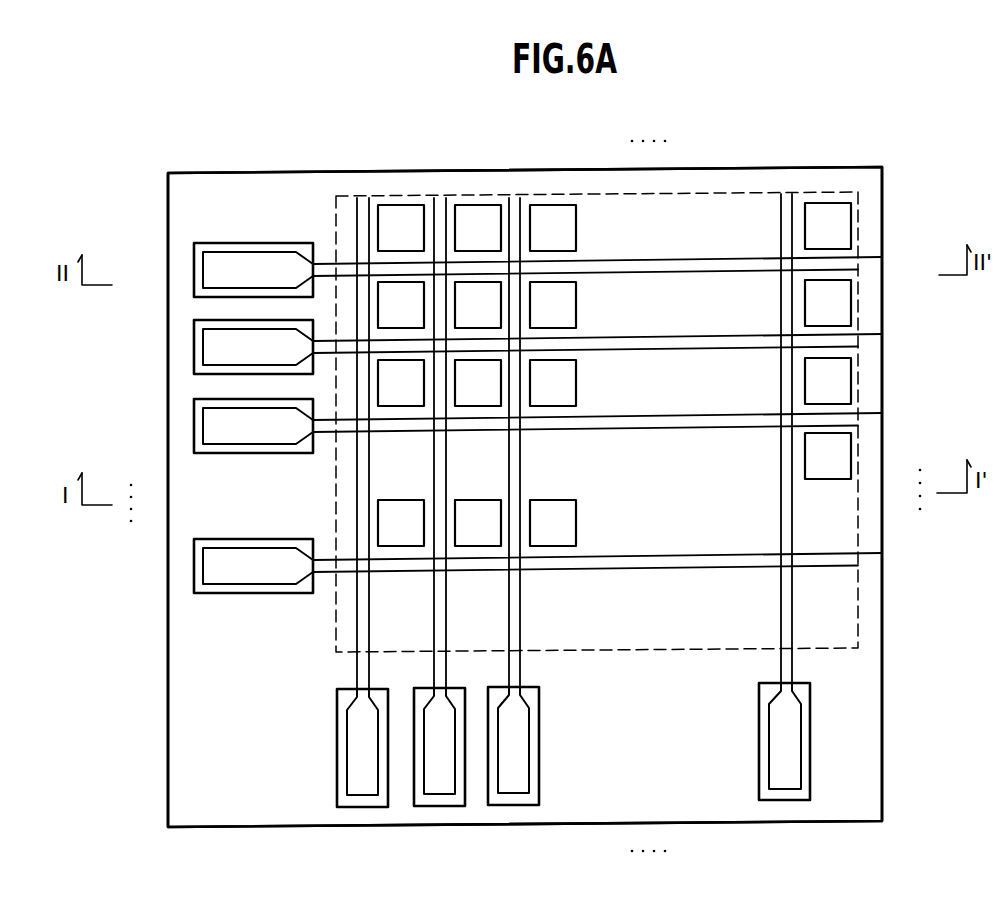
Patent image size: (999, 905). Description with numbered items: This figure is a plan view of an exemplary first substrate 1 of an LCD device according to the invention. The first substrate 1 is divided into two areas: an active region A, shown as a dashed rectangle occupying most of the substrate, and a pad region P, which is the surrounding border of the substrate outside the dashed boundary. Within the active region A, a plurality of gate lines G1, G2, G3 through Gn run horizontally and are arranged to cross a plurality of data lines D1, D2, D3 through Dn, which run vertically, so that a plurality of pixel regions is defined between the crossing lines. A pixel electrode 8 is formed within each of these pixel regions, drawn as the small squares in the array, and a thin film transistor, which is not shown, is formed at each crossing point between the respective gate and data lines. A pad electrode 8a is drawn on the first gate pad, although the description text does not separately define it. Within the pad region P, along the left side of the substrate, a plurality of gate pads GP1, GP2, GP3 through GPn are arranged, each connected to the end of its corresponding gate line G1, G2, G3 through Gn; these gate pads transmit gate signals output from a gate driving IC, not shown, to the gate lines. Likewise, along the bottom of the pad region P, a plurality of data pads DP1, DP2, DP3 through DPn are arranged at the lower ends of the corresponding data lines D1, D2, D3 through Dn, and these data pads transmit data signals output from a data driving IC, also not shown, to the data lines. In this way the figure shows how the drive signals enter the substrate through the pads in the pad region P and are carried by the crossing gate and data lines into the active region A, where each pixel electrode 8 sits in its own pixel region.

The first substrate 1 is at (882, 740).
The pad region P is at (213, 175).
The active region A is at (860, 625).
The pixel electrode 8 is at (567, 231).
The pad electrode 8a is at (262, 247).
The gate line G1 is at (848, 262).
The gate line G2 is at (848, 339).
The gate line G3 is at (848, 418).
The gate line Gn is at (848, 558).
The gate pad GP1 is at (211, 242).
The gate pad GP2 is at (194, 346).
The gate pad GP3 is at (194, 429).
The gate pad GPn is at (194, 569).
The data line D1 is at (363, 200).
The data line D2 is at (440, 200).
The data line D3 is at (515, 200).
The data line Dn is at (787, 196).
The data pad DP1 is at (362, 800).
The data pad DP2 is at (439, 799).
The data pad DP3 is at (514, 798).
The data pad DPn is at (784, 796).